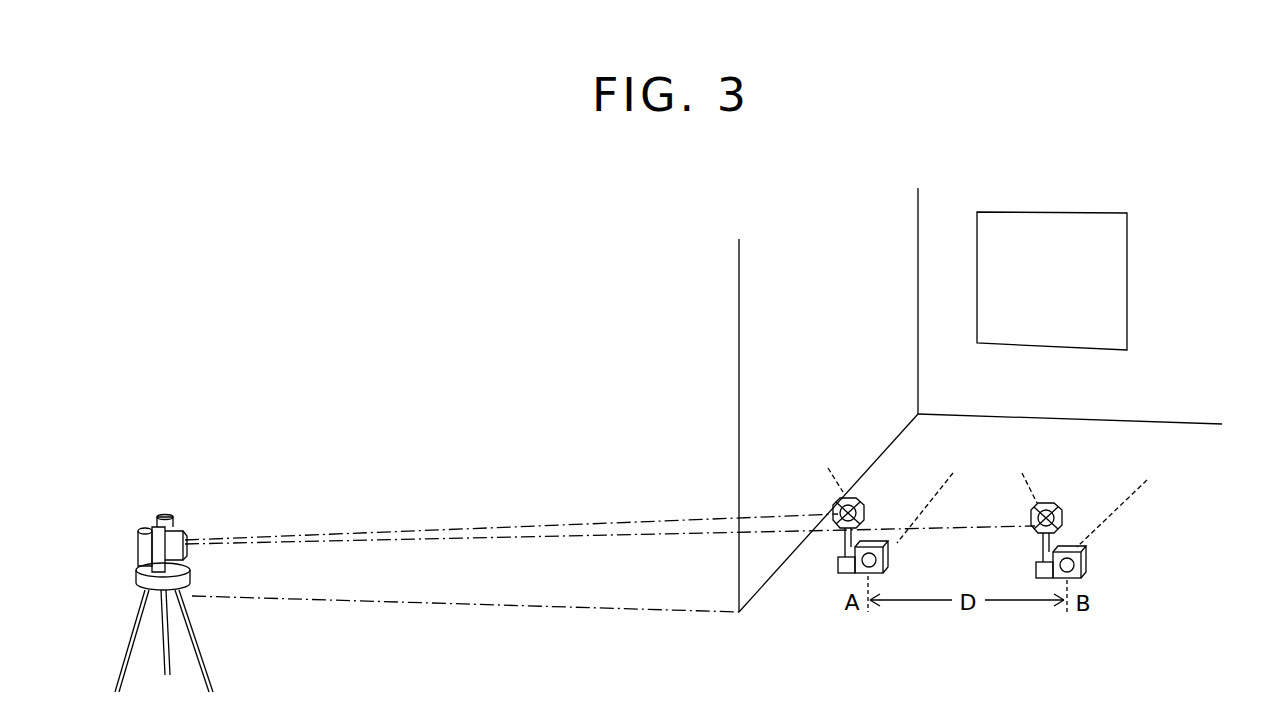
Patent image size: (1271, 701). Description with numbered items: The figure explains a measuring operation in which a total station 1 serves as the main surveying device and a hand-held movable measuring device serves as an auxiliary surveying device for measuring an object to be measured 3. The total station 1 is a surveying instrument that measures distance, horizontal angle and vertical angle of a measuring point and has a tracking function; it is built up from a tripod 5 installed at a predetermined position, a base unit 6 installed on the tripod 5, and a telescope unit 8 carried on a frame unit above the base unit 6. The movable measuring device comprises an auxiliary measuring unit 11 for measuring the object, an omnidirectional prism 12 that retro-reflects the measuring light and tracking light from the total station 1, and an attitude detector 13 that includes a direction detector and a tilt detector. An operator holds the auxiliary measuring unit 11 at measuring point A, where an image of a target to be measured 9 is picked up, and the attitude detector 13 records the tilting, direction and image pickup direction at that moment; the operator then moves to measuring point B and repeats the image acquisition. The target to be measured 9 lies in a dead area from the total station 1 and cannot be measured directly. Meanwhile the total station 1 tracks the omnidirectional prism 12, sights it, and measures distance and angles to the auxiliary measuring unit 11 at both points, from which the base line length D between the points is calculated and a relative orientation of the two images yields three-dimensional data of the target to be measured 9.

The total station 1 is at (194, 558).
The object to be measured 3 is at (799, 308).
The tripod 5 is at (203, 647).
The base unit 6 is at (133, 587).
The telescope unit 8 is at (183, 530).
The target to be measured 9 is at (1028, 212).
The auxiliary measuring unit 11 is at (860, 574).
The omnidirectional prism 12 is at (867, 522).
The attitude detector 13 is at (833, 498).